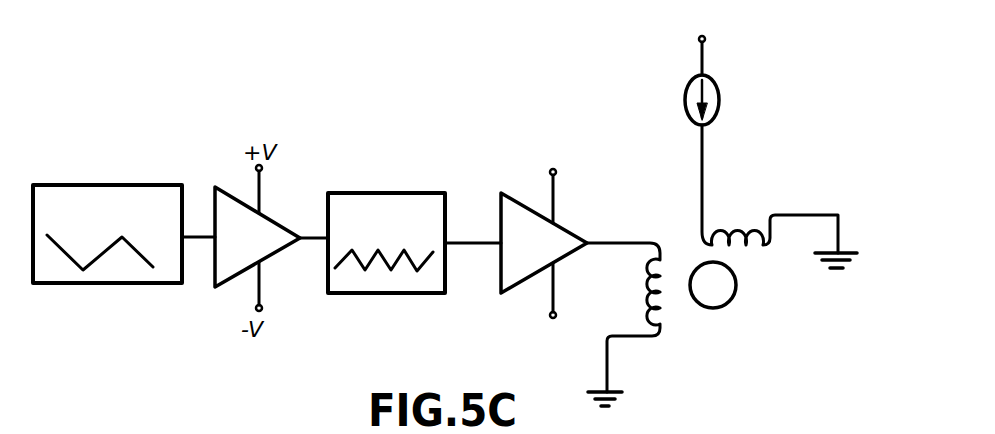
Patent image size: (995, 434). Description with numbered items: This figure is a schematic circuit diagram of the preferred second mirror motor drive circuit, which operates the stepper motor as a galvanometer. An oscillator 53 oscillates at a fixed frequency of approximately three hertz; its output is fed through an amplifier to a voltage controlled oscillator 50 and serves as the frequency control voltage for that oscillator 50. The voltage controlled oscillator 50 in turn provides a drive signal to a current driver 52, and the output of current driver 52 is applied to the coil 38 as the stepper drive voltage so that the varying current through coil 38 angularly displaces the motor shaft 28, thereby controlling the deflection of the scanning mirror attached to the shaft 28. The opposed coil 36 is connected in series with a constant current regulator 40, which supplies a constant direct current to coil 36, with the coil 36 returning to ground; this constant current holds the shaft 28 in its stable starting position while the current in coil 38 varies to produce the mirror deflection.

The oscillator 53 is at (113, 185).
The voltage controlled oscillator 50 is at (387, 193).
The current driver 52 is at (518, 200).
The magnetic coil 38 is at (665, 313).
The constant current regulator 40 is at (719, 86).
The magnetic coil 36 is at (740, 213).
The motor shaft 28 is at (736, 285).